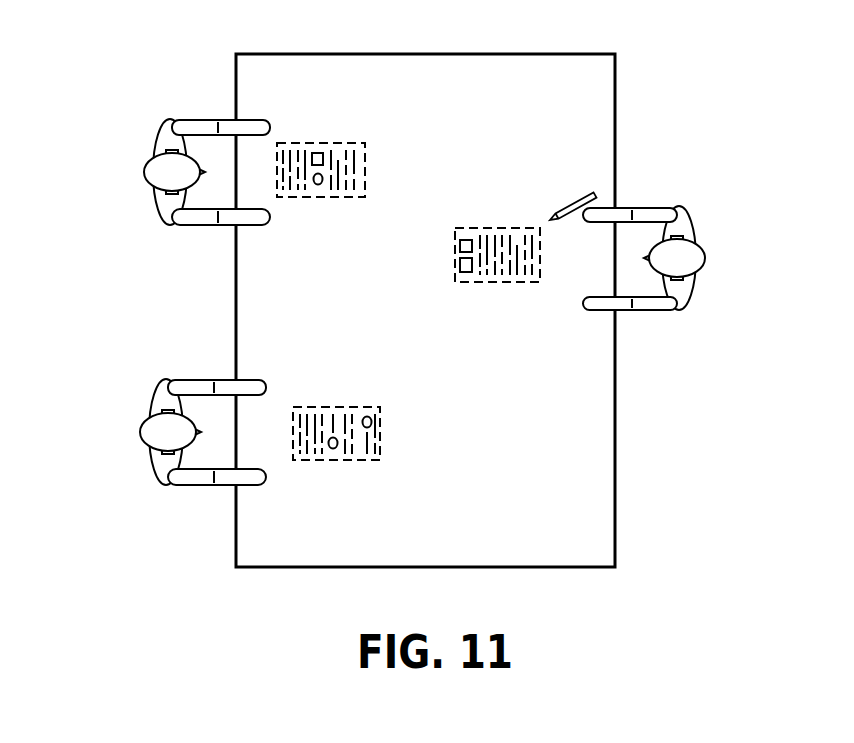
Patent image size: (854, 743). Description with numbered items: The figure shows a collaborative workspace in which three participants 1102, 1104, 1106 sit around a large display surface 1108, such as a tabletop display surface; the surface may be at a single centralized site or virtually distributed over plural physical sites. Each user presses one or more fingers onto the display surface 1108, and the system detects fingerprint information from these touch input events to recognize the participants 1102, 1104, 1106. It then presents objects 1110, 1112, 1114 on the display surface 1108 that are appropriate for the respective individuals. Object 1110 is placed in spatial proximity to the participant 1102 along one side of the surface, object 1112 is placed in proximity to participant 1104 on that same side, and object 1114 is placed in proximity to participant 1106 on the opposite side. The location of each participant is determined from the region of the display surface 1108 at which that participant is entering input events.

The participant 1102 is at (128, 103).
The participant 1104 is at (120, 373).
The participant 1106 is at (719, 197).
The display surface 1108 is at (443, 99).
The object 1110 is at (320, 197).
The object 1112 is at (338, 460).
The object 1114 is at (518, 282).